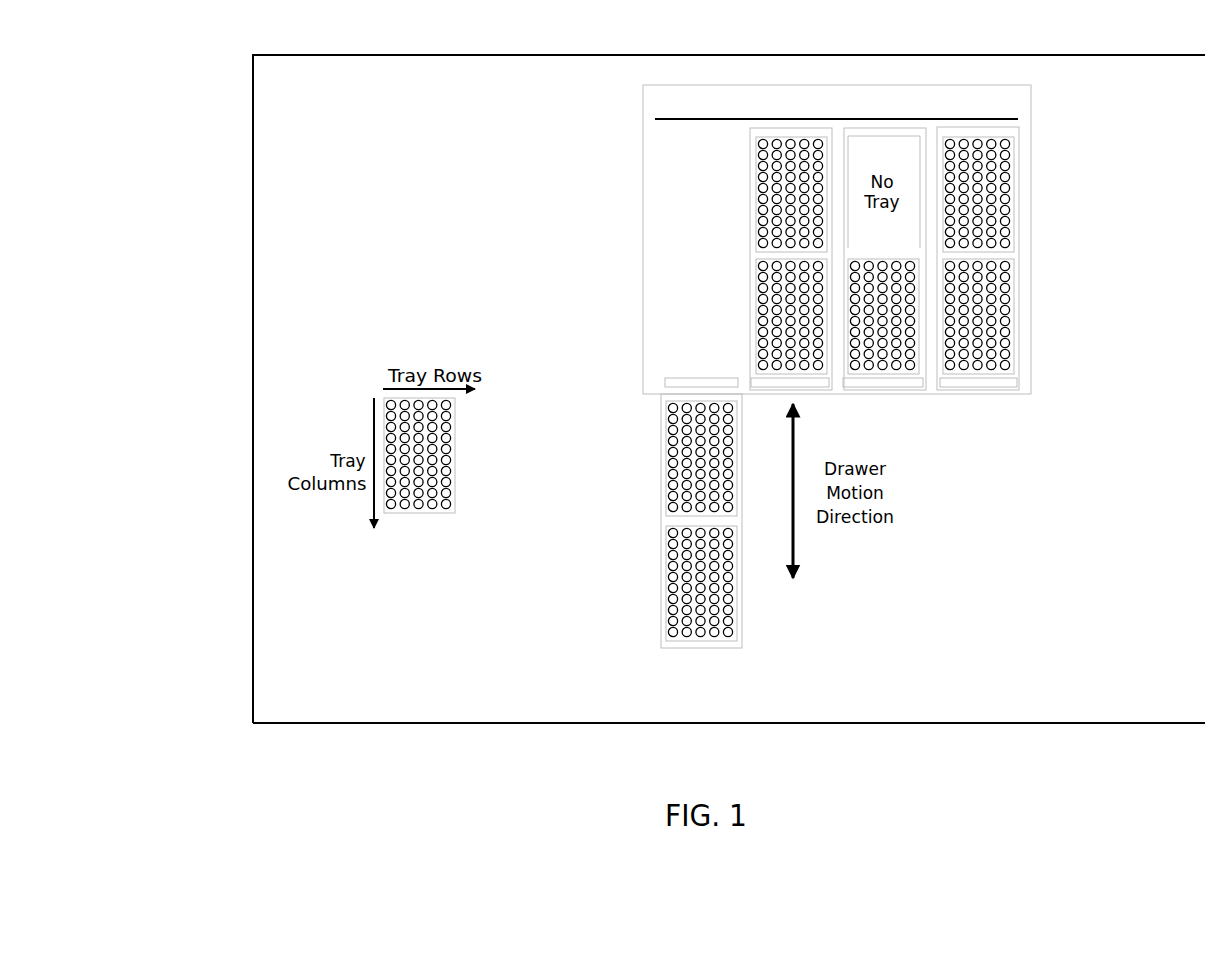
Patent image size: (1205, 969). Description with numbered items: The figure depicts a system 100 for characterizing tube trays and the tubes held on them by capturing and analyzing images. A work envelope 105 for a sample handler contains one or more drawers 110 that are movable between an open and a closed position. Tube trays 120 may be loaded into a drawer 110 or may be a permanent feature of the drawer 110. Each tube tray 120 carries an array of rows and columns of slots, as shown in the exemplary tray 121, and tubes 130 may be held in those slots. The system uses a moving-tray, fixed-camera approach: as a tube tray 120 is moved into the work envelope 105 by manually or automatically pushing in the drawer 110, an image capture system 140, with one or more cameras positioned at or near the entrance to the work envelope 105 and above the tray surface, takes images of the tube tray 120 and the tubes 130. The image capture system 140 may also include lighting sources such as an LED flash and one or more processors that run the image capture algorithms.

The system 100 is at (358, 43).
The work envelope 105 is at (1031, 103).
The drawer 110 is at (1037, 258).
The tube tray 120 is at (1003, 272).
The exemplary tray 121 is at (419, 471).
The tube 130 is at (729, 636).
The image capture system 140 is at (662, 376).